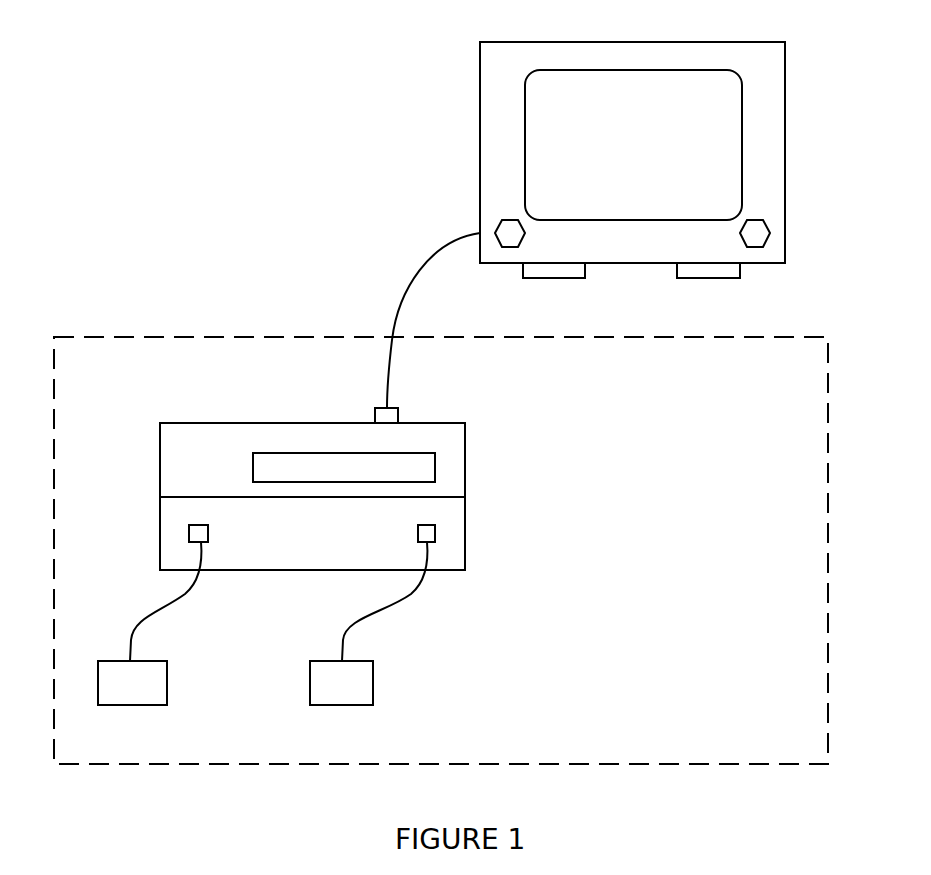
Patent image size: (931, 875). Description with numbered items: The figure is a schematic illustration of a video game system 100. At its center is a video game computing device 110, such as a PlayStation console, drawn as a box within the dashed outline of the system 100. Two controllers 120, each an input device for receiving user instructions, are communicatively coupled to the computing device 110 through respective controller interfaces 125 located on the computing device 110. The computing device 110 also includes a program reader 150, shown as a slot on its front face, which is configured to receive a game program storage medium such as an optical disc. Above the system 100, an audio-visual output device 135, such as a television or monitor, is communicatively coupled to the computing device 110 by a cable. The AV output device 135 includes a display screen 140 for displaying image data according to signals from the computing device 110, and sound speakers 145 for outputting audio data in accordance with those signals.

The video game system 100 is at (190, 337).
The video game computing device 110 is at (312, 423).
The controllers 120 is at (168, 682).
The controller interfaces 125 is at (208, 533).
The audio-visual (AV) output device 135 is at (633, 42).
The display screen 140 is at (525, 142).
The sound speakers 145 is at (503, 222).
The program reader 150 is at (435, 468).